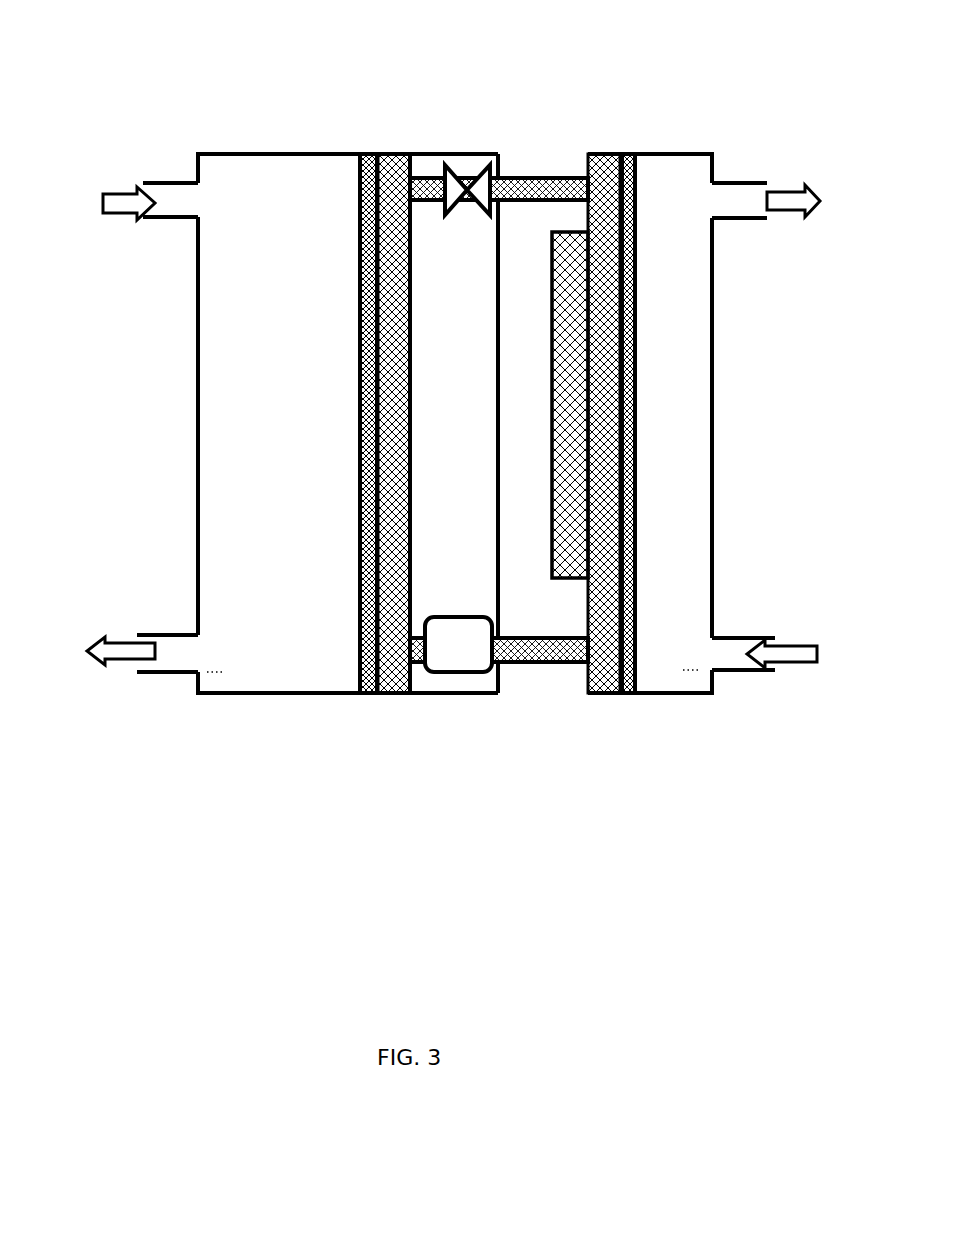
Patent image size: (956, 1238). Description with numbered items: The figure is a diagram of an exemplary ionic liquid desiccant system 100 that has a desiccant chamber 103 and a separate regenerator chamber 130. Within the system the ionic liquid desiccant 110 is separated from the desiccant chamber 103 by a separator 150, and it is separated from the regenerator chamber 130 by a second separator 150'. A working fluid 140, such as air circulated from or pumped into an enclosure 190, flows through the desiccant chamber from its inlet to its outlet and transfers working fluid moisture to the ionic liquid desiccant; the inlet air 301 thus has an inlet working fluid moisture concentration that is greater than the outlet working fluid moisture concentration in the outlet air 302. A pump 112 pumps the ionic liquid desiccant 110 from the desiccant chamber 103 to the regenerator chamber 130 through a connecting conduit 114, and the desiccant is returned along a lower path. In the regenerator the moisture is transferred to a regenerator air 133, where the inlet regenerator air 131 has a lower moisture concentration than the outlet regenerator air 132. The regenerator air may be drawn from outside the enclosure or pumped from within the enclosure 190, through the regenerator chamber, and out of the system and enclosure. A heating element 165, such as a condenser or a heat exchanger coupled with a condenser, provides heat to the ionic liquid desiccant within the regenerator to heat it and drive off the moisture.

The ionic liquid desiccant system 100 is at (464, 108).
The desiccant chamber 103 is at (290, 405).
The ionic liquid desiccant 110 is at (402, 178).
The pump 112 is at (462, 670).
The valve conduit 114 is at (498, 155).
The regenerator chamber 130 is at (695, 400).
The inlet regenerator air 131 is at (800, 655).
The outlet regenerator air 132 is at (790, 200).
The regenerator air 133 is at (693, 328).
The working fluid 140 is at (241, 183).
The separator 150 is at (342, 382).
The separator 150' is at (602, 382).
The heating element 165 is at (575, 392).
The enclosure 190 is at (78, 665).
The inlet air 301 is at (128, 200).
The outlet air 302 is at (107, 661).